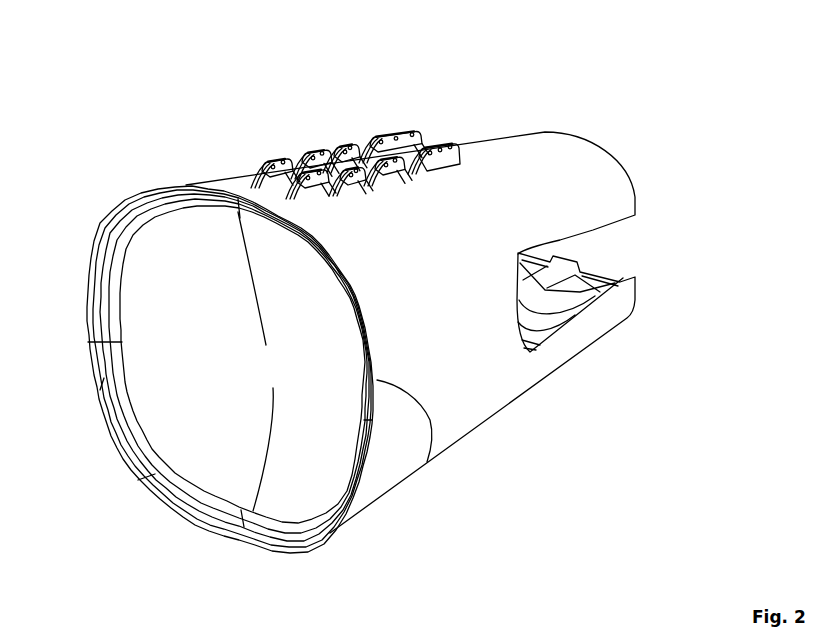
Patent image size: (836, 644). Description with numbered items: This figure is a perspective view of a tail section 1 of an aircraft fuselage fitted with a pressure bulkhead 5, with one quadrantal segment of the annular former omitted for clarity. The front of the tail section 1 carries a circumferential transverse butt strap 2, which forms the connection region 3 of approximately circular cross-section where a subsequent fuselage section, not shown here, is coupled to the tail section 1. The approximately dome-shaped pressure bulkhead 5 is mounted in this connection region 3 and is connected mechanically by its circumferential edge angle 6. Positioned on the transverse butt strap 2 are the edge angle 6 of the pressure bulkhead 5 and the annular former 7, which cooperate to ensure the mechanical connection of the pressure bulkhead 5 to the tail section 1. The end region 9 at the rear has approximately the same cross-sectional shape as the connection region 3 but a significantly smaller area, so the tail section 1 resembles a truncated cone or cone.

The tail section 1 is at (390, 128).
The transverse butt strap 2 is at (427, 462).
The connection region 3 is at (207, 165).
The pressure bulkhead 5 is at (264, 380).
The edge angle 6 is at (163, 208).
The annular former 7 is at (147, 360).
The end region 9 is at (626, 244).